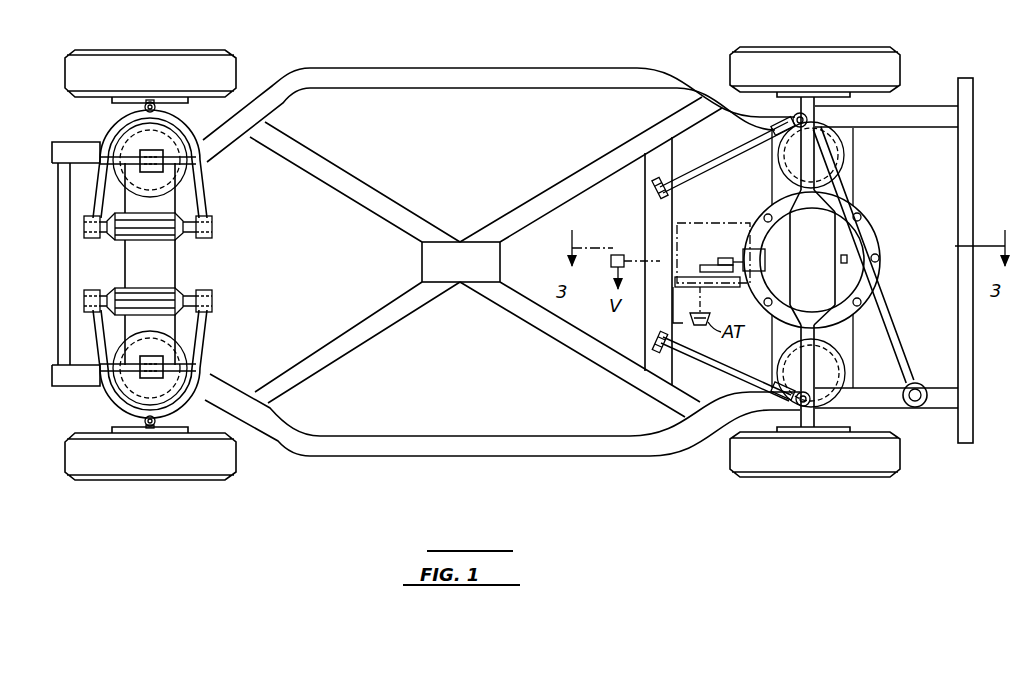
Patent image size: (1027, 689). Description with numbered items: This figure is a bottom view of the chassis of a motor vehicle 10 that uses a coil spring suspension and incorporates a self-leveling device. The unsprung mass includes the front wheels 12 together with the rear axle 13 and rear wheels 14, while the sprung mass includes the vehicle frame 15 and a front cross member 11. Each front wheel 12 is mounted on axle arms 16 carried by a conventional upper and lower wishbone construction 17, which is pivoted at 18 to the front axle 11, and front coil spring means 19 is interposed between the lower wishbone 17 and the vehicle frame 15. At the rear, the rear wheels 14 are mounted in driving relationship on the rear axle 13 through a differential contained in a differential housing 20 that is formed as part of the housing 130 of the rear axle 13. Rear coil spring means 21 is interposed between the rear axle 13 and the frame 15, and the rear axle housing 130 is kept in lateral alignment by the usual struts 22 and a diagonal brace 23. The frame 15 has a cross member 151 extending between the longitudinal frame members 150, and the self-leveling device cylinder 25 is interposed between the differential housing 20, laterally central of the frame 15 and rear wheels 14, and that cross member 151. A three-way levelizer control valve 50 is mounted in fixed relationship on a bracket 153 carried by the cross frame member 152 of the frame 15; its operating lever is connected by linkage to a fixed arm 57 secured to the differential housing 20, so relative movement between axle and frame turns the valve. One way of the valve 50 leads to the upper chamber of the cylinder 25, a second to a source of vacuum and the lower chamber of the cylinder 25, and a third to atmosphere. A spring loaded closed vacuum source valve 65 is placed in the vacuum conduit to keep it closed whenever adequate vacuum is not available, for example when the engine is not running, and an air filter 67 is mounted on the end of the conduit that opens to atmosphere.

The motor vehicle 10 is at (54, 249).
The front cross member 11 is at (174, 270).
The front wheels 12 is at (126, 60).
The rear axle 13 is at (823, 362).
The rear wheels 14 is at (784, 52).
The vehicle frame 15 is at (48, 164).
The axle arms 16 is at (143, 107).
The wishbone construction 17 is at (205, 200).
The pivot 18 is at (214, 224).
The front coil spring means 19 is at (118, 137).
The differential housing 20 is at (845, 246).
The rear coil spring means 21 is at (845, 148).
The struts 22 is at (706, 166).
The diagonal brace 23 is at (905, 362).
The self-leveling device cylinder 25 is at (870, 211).
The three-way levelizer control valve 50 is at (688, 265).
The fixed arm 57 is at (725, 260).
The vacuum source valve 65 is at (618, 254).
The air filter 67 is at (693, 331).
The rear axle housing 130 is at (818, 190).
The longitudinal frame members 150 is at (565, 68).
The frame cross member 151 is at (848, 323).
The cross frame member 152 is at (653, 205).
The bracket 153 is at (718, 288).